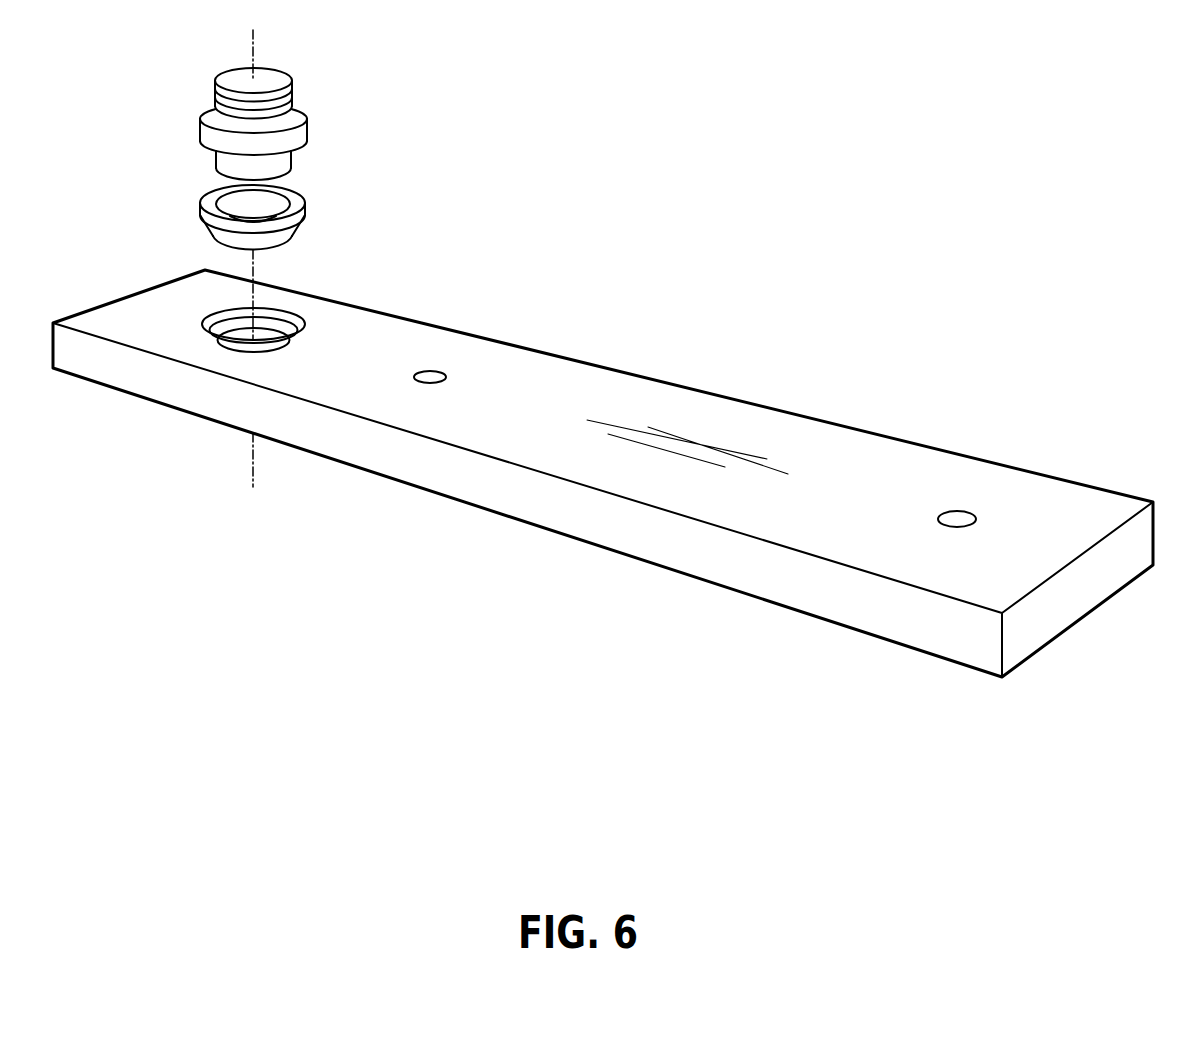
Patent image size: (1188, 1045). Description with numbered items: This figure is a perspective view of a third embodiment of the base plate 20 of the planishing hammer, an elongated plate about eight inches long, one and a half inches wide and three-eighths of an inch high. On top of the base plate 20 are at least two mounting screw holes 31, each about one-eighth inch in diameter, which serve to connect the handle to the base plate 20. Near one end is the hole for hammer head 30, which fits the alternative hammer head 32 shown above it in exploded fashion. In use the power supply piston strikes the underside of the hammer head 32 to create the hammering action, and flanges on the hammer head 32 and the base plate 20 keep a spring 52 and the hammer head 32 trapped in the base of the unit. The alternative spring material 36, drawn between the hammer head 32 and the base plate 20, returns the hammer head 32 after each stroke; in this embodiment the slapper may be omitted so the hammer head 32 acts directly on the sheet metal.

The base plate 20 is at (690, 407).
The hole for hammer head 30 is at (268, 347).
The mounting screw holes 31 is at (430, 377).
The hammer head 32 is at (245, 120).
The alternative spring material 36 is at (210, 224).
The spring 52 is at (290, 98).